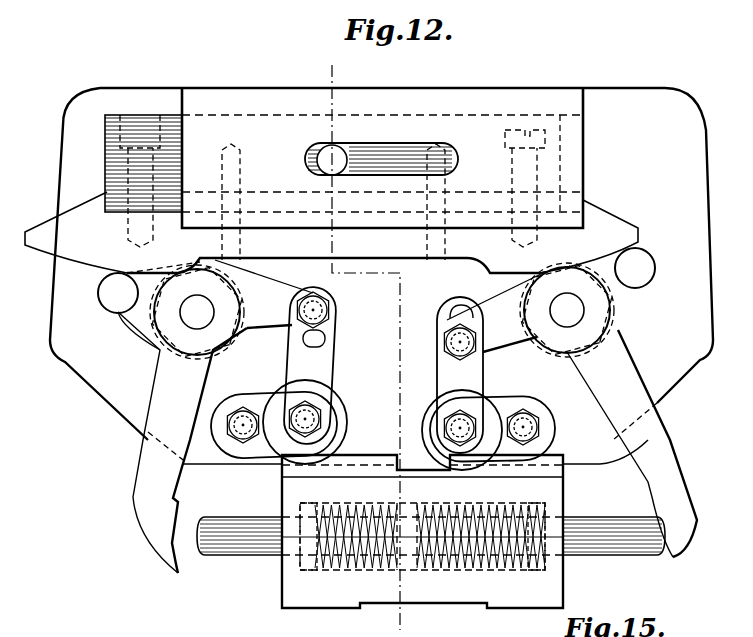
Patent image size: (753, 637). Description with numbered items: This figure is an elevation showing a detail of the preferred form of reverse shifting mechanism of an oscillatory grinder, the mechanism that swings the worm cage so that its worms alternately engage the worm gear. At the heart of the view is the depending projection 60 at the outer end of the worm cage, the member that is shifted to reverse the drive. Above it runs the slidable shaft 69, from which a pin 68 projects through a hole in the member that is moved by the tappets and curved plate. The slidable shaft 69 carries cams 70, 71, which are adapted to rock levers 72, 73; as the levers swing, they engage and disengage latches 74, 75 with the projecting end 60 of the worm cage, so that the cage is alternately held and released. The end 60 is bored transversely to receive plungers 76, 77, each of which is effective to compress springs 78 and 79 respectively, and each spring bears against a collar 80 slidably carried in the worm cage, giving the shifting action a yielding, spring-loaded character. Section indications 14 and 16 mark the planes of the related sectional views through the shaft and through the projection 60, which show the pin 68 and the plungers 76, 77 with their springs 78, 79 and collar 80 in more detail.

The section line 14- 14 is at (320, 79).
The section line 16- 16 is at (266, 560).
The depending projection 60 is at (293, 590).
The pin 68 is at (326, 150).
The slidable shaft 69 is at (145, 130).
The cam 70 is at (608, 222).
The cam 71 is at (48, 228).
The lever 72 is at (618, 356).
The lever 73 is at (163, 375).
The latch 74 is at (425, 420).
The latch 75 is at (330, 407).
The plunger 76 is at (217, 526).
The plunger 77 is at (622, 525).
The spring 78 is at (348, 566).
The spring 79 is at (496, 566).
The collar 80 is at (417, 513).